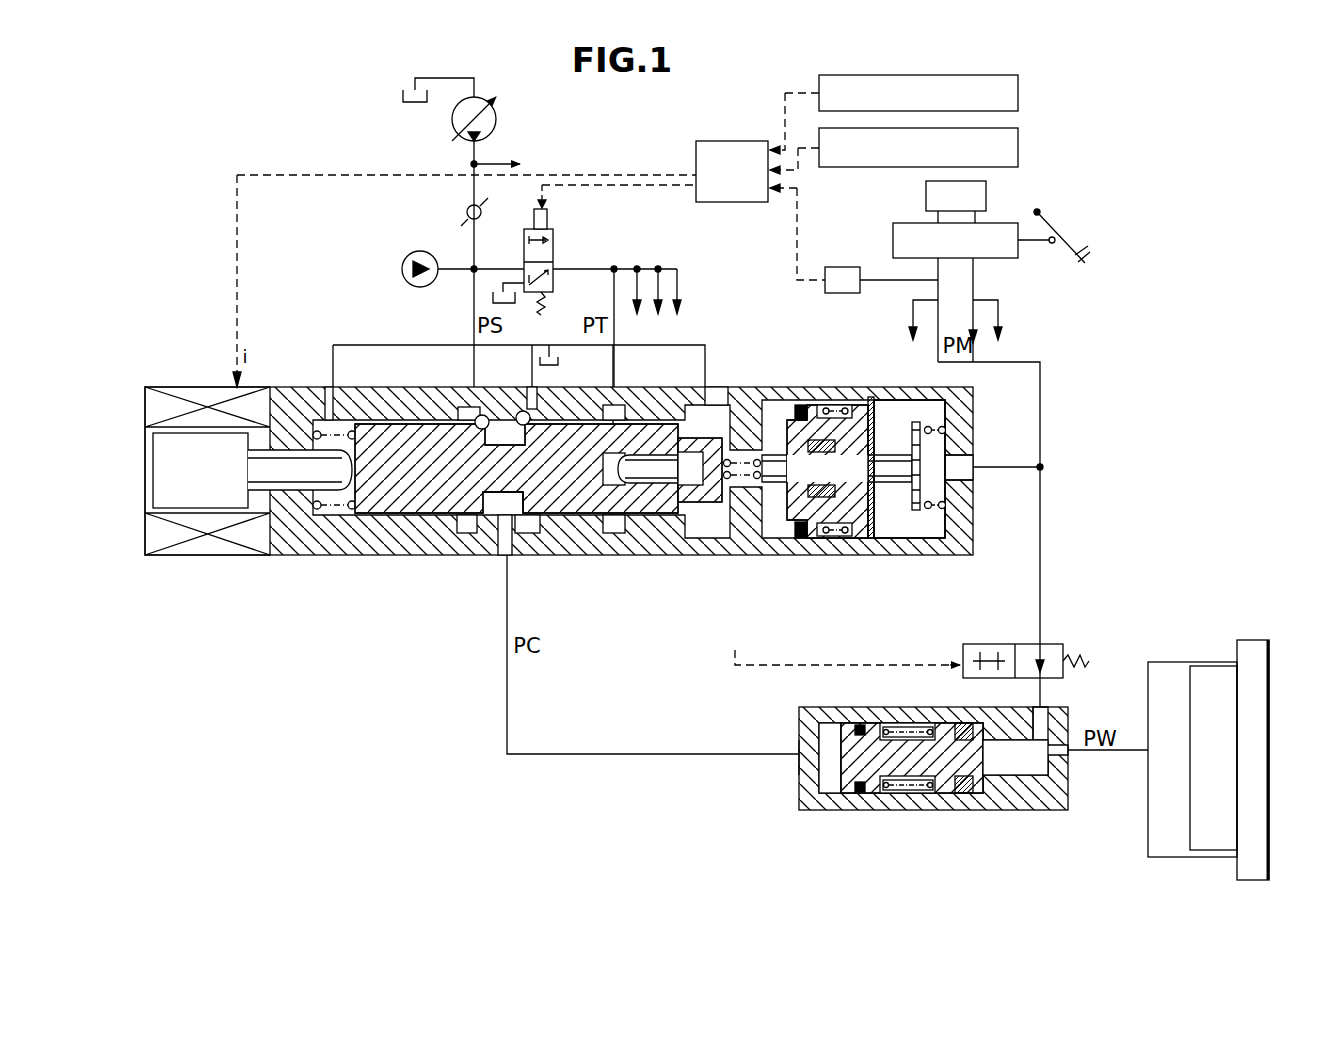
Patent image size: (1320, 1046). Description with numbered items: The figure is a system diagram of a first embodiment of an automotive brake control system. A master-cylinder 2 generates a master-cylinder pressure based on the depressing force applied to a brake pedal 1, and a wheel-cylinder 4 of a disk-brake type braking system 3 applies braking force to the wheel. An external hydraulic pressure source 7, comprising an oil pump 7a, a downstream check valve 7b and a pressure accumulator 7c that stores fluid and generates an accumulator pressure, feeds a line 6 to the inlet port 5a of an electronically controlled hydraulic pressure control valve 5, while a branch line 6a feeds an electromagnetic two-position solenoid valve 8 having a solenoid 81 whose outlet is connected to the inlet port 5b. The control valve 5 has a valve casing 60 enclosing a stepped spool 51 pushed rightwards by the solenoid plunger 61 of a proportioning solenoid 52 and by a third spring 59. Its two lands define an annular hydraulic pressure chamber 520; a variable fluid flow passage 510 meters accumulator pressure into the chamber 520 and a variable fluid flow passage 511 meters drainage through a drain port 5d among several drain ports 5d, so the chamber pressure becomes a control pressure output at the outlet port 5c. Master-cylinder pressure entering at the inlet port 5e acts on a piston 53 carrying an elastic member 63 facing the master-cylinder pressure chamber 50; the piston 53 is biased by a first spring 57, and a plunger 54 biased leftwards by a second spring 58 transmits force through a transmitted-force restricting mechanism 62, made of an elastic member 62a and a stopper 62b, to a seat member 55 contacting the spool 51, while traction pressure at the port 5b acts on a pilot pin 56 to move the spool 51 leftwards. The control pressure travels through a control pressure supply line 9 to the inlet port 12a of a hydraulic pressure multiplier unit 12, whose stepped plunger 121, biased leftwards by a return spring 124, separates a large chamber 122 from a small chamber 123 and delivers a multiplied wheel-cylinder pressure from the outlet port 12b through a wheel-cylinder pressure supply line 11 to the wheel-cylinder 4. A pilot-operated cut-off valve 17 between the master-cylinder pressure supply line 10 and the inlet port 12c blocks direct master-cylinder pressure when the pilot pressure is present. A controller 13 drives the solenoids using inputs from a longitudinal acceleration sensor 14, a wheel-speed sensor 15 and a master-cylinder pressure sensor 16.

The brake pedal 1 is at (1085, 258).
The master-cylinder 2 is at (1000, 223).
The braking system 3 is at (1253, 638).
The wheel-cylinder 4 is at (1148, 840).
The hydraulic pressure control valve 5 is at (757, 385).
The inlet port 5a is at (468, 388).
The inlet port 5b is at (618, 388).
The outlet port 5c is at (520, 555).
The drain ports 5d is at (337, 388).
The inlet port 5e is at (975, 470).
The line 6 is at (472, 300).
The branch line 6a is at (495, 268).
The external hydraulic pressure source 7 is at (451, 182).
The oil pump 7a is at (498, 125).
The check valve 7b is at (482, 207).
The pressure accumulator 7c is at (405, 260).
The electromagnetic two-position solenoid valve 8 is at (556, 250).
The electromagnetic solenoid 81 is at (552, 220).
The control pressure supply line 9 is at (505, 597).
The master-cylinder pressure supply line 10 is at (1042, 412).
The wheel-cylinder pressure supply line 11 is at (1128, 752).
The hydraulic pressure multiplier unit 12 is at (900, 707).
The inlet port 12a is at (799, 765).
The outlet port 12b is at (1068, 780).
The inlet port 12c is at (1065, 705).
The controller 13 is at (733, 140).
The longitudinal acceleration sensor 14 is at (1018, 93).
The wheel-speed sensor 15 is at (1018, 147).
The master-cylinder pressure sensor 16 is at (843, 266).
The pilot-operated cut-off valve 17 is at (1050, 644).
The master-cylinder pressure chamber 50 is at (933, 520).
The stepped spool 51 is at (395, 515).
The electromagnetic proportioning solenoid 52 is at (197, 390).
The piston 53 is at (862, 540).
The plunger 54 is at (883, 540).
The seat member 55 is at (657, 470).
The pilot pin 56 is at (640, 505).
The first spring 57 is at (832, 540).
The second spring 58 is at (945, 432).
The third spring 59 is at (345, 500).
The valve casing 60 is at (812, 397).
The solenoid plunger 61 is at (228, 488).
The transmitted-force restricting mechanism 62 is at (748, 558).
The elastic member 62a is at (752, 492).
The stopper 62b is at (735, 492).
The elastic member 63 is at (872, 396).
The stepped plunger 121 is at (910, 795).
The hydraulic fluid pressure chamber 122 is at (832, 795).
The hydraulic fluid pressure chamber 123 is at (1030, 775).
The return spring 124 is at (930, 795).
The variable fluid flow passage 510 is at (478, 430).
The variable fluid flow passage 511 is at (528, 426).
The annular hydraulic pressure chamber 520 is at (493, 500).